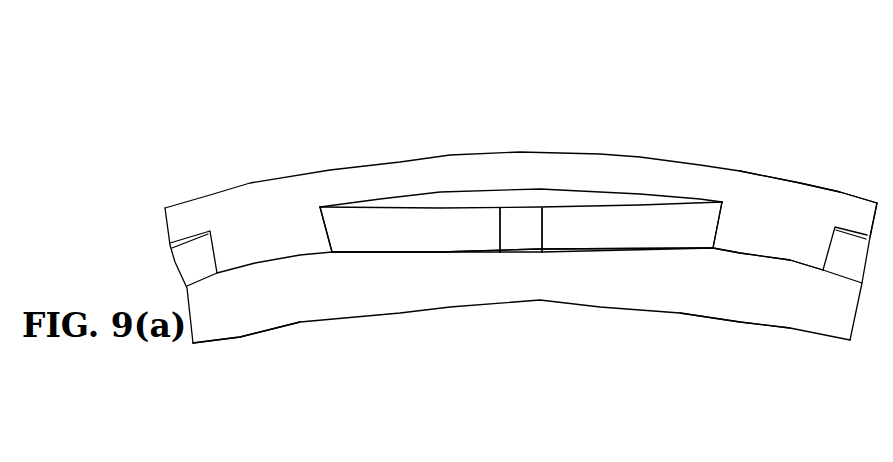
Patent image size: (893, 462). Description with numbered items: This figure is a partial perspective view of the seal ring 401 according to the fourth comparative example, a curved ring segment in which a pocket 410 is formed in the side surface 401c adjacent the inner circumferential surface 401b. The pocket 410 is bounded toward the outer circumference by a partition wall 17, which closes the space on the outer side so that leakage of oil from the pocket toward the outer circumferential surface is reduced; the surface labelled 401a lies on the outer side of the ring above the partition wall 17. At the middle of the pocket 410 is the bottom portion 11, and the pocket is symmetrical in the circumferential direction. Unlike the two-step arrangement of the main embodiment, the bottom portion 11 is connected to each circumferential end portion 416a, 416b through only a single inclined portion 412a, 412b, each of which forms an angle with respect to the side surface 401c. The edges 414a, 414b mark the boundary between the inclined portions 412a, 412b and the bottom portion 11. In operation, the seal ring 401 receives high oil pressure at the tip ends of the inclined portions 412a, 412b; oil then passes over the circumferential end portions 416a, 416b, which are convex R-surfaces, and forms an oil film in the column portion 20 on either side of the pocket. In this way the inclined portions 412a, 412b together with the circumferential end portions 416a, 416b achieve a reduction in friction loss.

The seal ring 401 is at (521, 214).
The top surface of curved body 401a is at (622, 155).
The inner circumferential surface 401b is at (817, 305).
The side surface 401c is at (775, 197).
The partition wall 17 is at (527, 258).
The bottom portion 11 is at (517, 237).
The pocket 410 is at (517, 193).
The inclined portion 412a is at (425, 235).
The inclined portion 412b is at (617, 235).
The first edge 414a is at (500, 213).
The second edge 414b is at (542, 215).
The circumferential end portion 416a is at (328, 207).
The circumferential end portion 416b is at (714, 250).
The column portion 20 is at (280, 340).